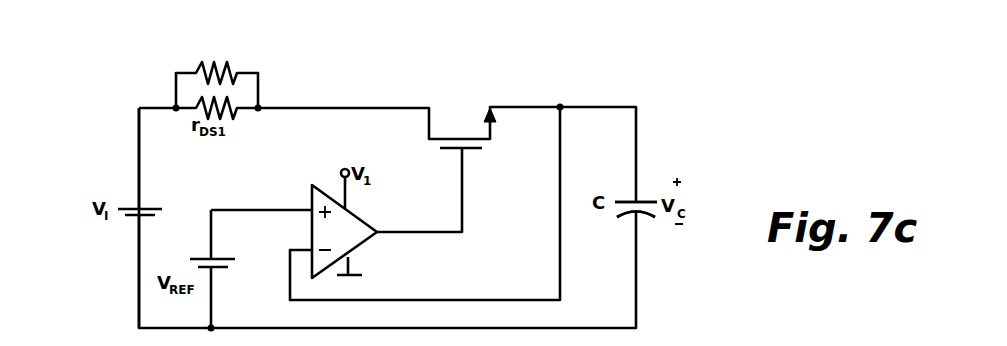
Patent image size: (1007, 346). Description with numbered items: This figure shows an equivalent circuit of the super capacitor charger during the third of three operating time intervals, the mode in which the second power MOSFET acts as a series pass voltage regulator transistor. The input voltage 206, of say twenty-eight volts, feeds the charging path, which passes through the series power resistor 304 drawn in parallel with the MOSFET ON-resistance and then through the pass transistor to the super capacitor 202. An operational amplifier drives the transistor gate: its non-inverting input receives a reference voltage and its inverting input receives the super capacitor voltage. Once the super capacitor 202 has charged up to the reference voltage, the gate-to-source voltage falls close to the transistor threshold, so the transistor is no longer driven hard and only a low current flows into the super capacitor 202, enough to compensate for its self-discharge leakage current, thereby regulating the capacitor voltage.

The series power resistor 304 is at (232, 70).
The input voltage 206 is at (135, 218).
The super capacitor 202 is at (651, 214).